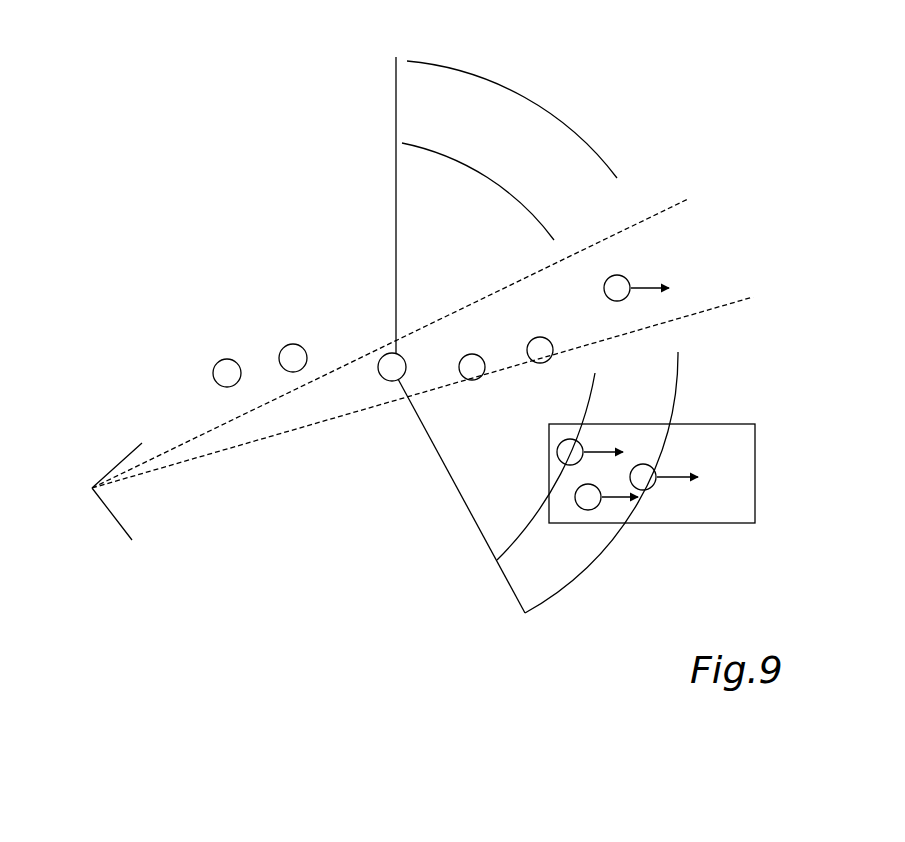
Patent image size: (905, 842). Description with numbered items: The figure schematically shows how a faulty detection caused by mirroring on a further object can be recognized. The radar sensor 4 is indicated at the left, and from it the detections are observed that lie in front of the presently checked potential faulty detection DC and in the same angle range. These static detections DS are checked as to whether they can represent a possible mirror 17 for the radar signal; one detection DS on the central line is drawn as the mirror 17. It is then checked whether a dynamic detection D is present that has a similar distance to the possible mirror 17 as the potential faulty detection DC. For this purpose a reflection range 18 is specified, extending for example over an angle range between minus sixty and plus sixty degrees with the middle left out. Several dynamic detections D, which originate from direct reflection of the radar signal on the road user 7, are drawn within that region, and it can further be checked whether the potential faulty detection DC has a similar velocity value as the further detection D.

The radar sensor 4 is at (94, 486).
The road user 7 is at (719, 420).
The mirror 17 is at (378, 349).
The reflection range 18 is at (552, 112).
The dynamic detection D is at (557, 452).
The static detection DS is at (369, 435).
The potential faulty detection DC is at (630, 278).